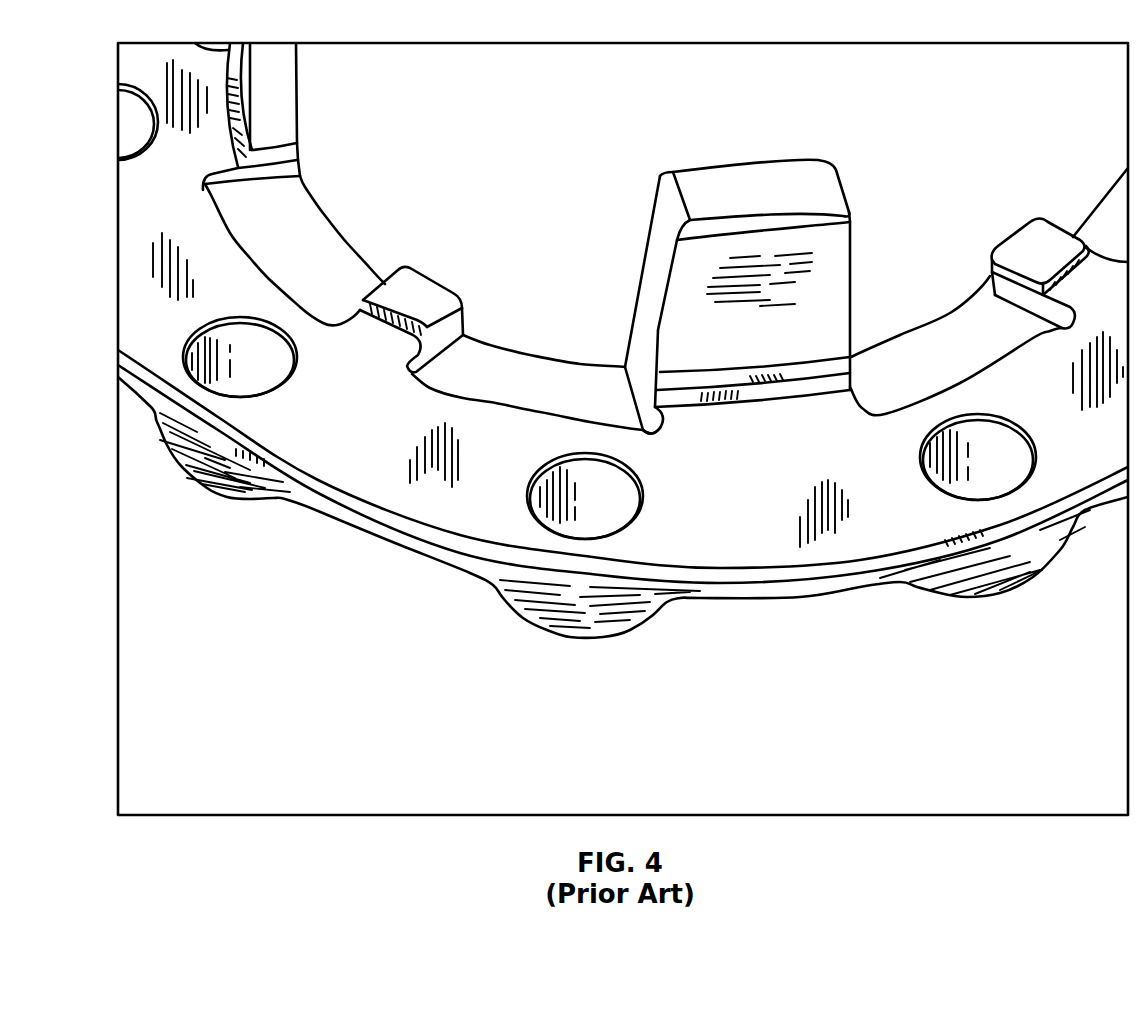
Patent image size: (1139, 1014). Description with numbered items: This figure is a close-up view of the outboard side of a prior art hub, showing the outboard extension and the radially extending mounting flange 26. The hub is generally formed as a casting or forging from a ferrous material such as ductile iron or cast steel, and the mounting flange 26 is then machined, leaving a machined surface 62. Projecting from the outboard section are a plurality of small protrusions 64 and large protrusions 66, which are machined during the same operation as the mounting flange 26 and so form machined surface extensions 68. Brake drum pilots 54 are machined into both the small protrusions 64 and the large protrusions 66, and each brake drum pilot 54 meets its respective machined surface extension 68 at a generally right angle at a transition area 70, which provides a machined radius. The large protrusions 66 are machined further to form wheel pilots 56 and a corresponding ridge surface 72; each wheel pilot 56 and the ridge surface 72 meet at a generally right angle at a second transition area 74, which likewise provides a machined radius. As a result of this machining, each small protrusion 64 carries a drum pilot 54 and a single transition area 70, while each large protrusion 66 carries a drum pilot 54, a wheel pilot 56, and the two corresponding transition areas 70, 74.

The mounting flange 26 is at (888, 490).
The brake drum pilot 54 is at (690, 395).
The wheel pilot 56 is at (250, 77).
The machined surface 62 is at (447, 492).
The small protrusion 64 is at (430, 286).
The large protrusion 66 is at (745, 185).
The machined surface extension 68 is at (693, 422).
The transition area 70 is at (740, 413).
The ridge surface 72 is at (811, 372).
The transition area 74 is at (790, 365).